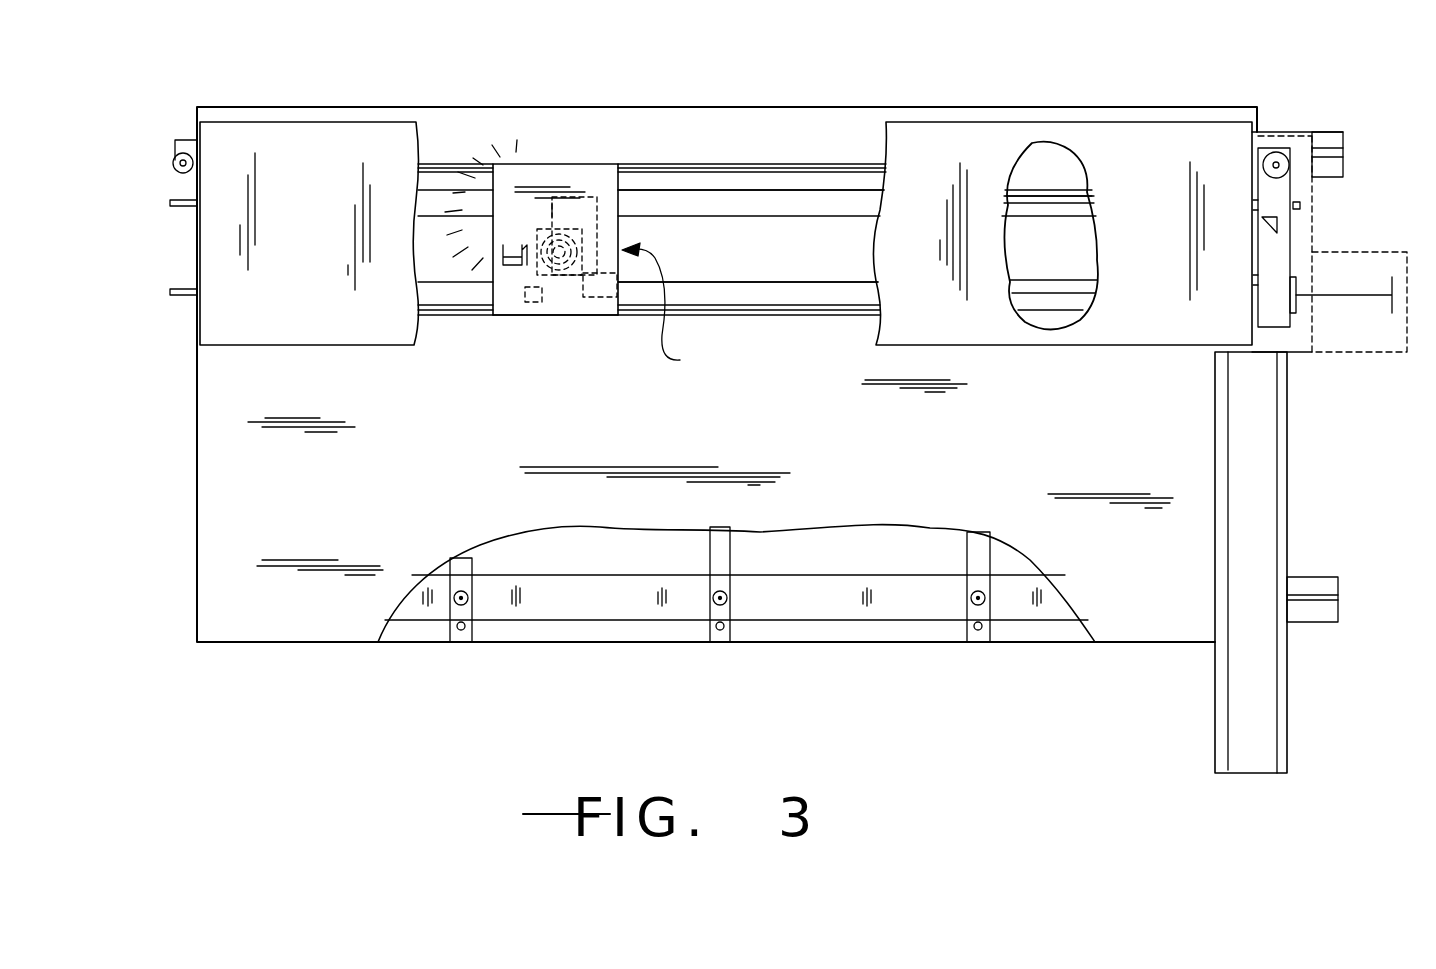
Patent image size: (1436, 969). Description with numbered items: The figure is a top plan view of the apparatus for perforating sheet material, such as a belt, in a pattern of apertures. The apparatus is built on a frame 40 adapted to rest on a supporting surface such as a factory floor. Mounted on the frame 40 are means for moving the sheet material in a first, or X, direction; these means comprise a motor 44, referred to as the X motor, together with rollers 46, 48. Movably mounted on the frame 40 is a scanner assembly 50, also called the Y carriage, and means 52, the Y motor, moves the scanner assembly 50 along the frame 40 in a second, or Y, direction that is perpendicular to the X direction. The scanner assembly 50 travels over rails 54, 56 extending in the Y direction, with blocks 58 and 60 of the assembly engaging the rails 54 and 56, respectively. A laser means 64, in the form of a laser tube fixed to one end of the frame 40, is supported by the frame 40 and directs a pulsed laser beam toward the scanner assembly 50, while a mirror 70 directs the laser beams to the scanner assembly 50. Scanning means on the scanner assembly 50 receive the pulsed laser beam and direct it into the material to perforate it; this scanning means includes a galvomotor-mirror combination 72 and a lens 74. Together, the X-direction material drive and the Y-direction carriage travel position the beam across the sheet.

The frame 40 is at (952, 574).
The motor 44 is at (1407, 340).
The roller 46 is at (1046, 303).
The roller 48 is at (1070, 210).
The scanner assembly 50 is at (675, 309).
The means for moving scanner assembly 52 is at (1330, 138).
The rail 54 is at (782, 318).
The rail 56 is at (751, 193).
The block 58 is at (547, 318).
The block 60 is at (562, 162).
The laser means 64 is at (1265, 540).
The mirror 70 is at (1278, 227).
The galvomotor-mirror combination 72 is at (512, 268).
The lens 74 is at (562, 272).